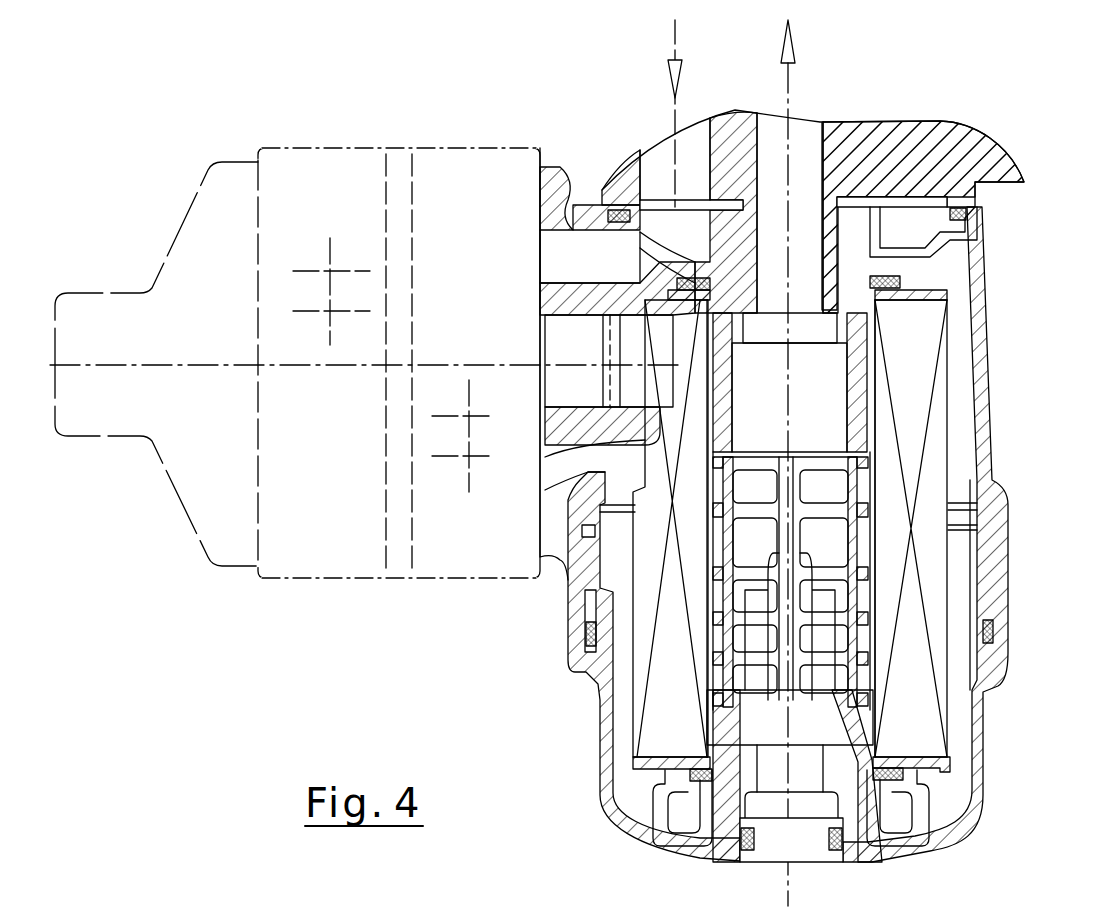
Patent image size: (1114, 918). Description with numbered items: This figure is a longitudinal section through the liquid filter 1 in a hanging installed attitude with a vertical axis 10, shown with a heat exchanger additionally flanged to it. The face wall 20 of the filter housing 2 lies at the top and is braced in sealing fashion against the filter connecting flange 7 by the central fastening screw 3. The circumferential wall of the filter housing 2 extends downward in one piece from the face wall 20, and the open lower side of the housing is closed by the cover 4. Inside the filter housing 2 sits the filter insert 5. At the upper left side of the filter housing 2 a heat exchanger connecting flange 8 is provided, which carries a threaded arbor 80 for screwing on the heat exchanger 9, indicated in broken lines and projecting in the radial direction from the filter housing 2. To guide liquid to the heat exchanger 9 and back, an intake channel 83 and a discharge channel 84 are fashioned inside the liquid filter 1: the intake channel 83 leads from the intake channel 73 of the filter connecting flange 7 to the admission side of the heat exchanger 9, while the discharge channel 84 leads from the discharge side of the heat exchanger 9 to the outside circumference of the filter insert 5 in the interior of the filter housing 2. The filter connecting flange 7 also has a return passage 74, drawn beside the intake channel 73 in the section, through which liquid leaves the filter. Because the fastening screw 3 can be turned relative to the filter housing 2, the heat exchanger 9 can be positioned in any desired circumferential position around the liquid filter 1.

The liquid filter 1 is at (999, 376).
The filter housing 2 is at (988, 322).
The central fastening screw 3 is at (876, 308).
The cover 4 is at (985, 790).
The filter insert 5 is at (962, 453).
The filter connecting flange 7 is at (988, 197).
The heat exchanger connecting flange 8 is at (549, 158).
The heat exchanger 9 is at (351, 142).
The vertical axis 10 is at (793, 886).
The face wall 20 is at (952, 282).
The intake channel 73 is at (688, 132).
The return channel 74 is at (798, 135).
The threaded arbor 80 is at (561, 453).
The intake channel 83 is at (573, 243).
The discharge channel 84 is at (653, 342).